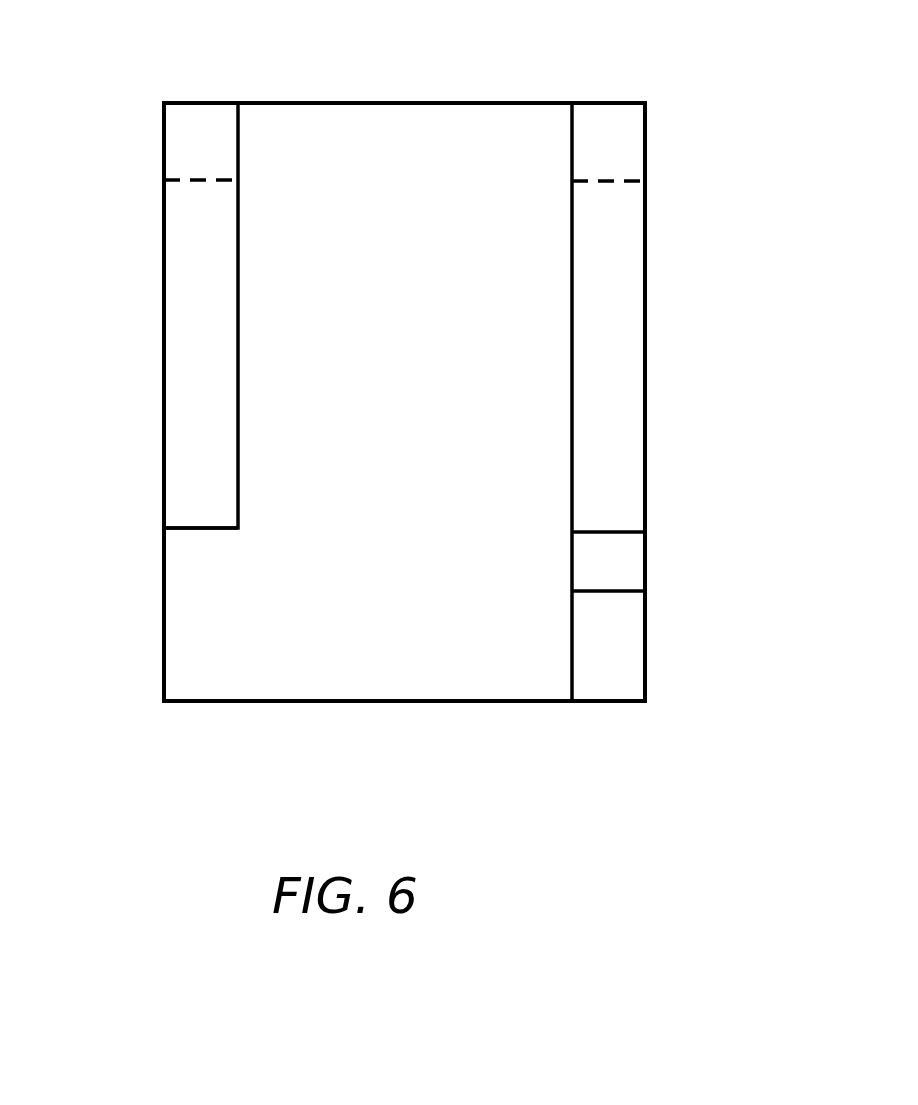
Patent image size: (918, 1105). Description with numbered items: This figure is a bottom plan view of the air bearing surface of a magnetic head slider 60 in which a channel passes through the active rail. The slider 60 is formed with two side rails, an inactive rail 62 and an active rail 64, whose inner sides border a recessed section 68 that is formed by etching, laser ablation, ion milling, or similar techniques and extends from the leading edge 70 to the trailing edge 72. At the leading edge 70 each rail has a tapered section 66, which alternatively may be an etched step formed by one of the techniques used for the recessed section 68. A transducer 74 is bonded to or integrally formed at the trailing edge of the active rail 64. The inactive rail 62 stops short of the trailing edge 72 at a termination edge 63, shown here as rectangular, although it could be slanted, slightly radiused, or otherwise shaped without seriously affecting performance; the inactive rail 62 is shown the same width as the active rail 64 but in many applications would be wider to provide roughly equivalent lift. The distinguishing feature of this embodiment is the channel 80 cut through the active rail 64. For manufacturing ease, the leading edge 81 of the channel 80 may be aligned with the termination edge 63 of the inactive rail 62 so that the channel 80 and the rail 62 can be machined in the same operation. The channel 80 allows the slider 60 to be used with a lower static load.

The magnetic head slider 60 is at (140, 621).
The inactive rail 62 is at (182, 497).
The termination edge 63 is at (195, 530).
The active rail 64 is at (630, 345).
The tapered section 66 is at (182, 135).
The recessed section 68 is at (418, 355).
The leading edge 70 is at (288, 103).
The trailing edge 72 is at (323, 702).
The transducer 74 is at (604, 706).
The channel 80 is at (610, 573).
The leading edge of channel 81 is at (613, 536).